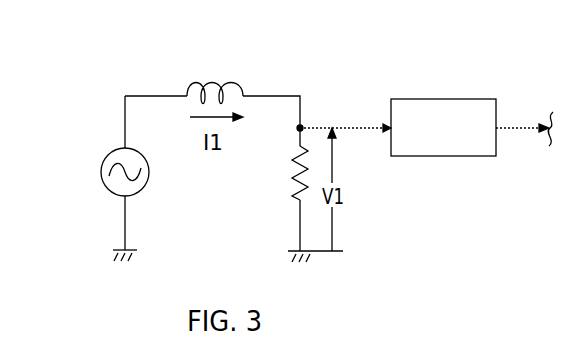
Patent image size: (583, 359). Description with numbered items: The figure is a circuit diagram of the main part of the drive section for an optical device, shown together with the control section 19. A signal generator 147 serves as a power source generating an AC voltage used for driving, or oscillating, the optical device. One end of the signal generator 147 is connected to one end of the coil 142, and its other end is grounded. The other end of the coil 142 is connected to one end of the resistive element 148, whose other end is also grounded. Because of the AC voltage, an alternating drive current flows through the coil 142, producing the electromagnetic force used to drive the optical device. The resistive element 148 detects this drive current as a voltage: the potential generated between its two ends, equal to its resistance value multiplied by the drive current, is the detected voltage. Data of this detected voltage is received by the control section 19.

The coil 142 is at (218, 66).
The signal generator 147 is at (103, 168).
The resistive element 148 is at (290, 186).
The control section 19 is at (480, 99).